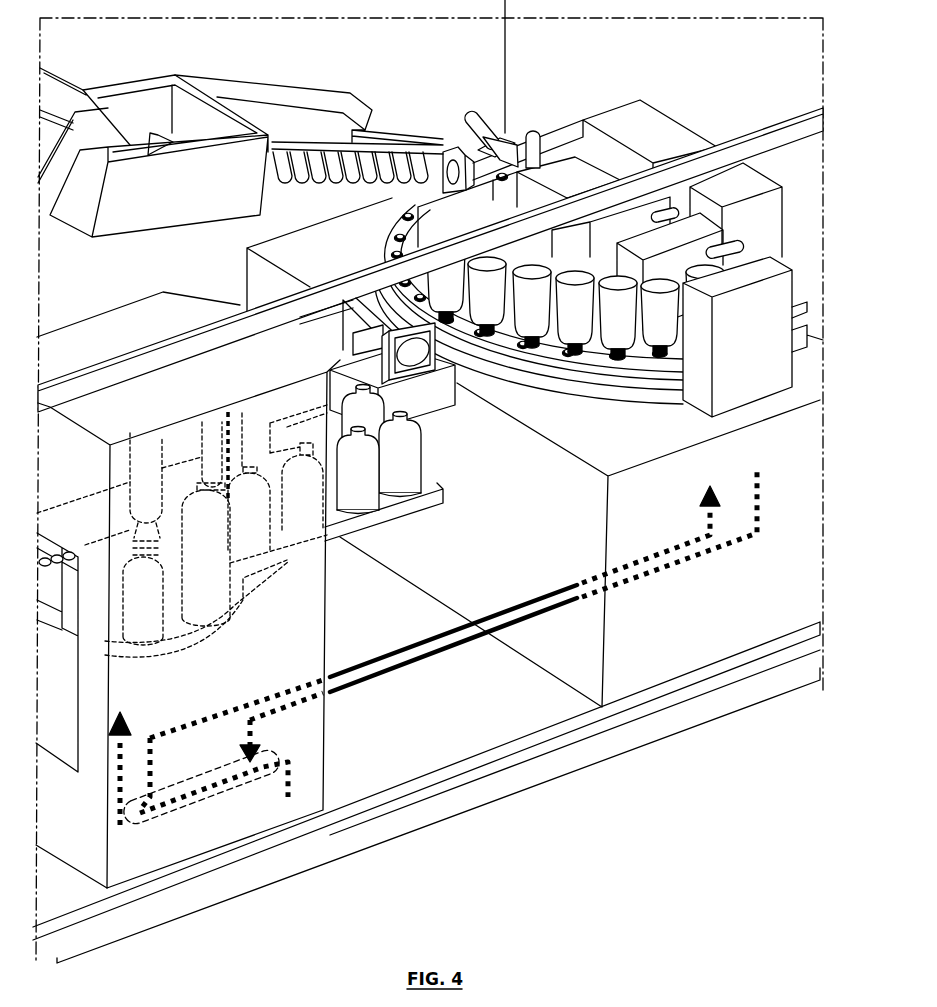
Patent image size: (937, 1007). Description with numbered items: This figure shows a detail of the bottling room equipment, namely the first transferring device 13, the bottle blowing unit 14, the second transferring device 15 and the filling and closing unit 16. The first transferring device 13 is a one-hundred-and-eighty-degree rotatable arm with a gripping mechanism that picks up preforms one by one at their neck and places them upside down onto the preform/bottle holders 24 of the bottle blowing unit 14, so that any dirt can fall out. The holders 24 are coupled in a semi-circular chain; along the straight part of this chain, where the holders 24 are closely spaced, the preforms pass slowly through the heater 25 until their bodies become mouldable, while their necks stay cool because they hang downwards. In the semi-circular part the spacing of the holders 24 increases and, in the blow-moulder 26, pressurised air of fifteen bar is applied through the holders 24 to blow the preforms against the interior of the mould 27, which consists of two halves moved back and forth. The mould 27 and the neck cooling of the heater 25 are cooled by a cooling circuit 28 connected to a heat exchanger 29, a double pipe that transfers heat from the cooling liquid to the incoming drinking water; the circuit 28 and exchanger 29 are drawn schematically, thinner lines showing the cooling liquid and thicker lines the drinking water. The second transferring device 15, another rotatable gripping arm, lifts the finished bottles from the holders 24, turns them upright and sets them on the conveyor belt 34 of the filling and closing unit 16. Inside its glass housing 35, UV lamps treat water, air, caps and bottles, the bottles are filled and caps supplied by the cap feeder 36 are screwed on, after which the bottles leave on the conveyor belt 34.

The first transferring device 13 is at (520, 118).
The bottle blowing unit 14 is at (463, 201).
The second transferring device 15 is at (439, 402).
The filling and closing unit 16 is at (278, 626).
The preform/bottle holders 24 is at (392, 232).
The heater 25 is at (665, 135).
The blow-moulder 26 is at (770, 368).
The mould 27 is at (753, 270).
The cooling circuit 28 is at (437, 655).
The heat exchanger 29 is at (203, 813).
The conveyor belt 34 is at (392, 512).
The glass housing 35 is at (300, 576).
The cap feeder 36 is at (62, 580).